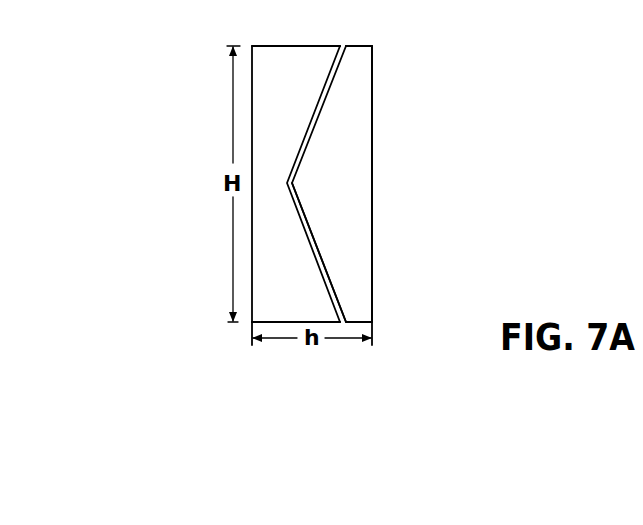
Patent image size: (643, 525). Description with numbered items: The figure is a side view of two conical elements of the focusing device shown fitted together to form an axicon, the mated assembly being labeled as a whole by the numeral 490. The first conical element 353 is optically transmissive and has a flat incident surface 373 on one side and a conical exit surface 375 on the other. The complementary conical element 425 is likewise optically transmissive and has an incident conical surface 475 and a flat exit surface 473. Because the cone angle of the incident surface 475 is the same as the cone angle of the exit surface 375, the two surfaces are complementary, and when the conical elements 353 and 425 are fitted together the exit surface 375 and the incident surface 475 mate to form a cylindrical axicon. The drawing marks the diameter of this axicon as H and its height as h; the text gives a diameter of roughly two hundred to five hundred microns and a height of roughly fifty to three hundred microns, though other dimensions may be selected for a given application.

The optical element 490 is at (205, 100).
The conical element 353 is at (285, 43).
The conical exit surface 375 is at (327, 62).
The complementary conical element 425 is at (358, 43).
The incident conical surface 475 is at (327, 270).
The flat exit surface 473 is at (372, 305).
The flat incident surface 373 is at (250, 316).